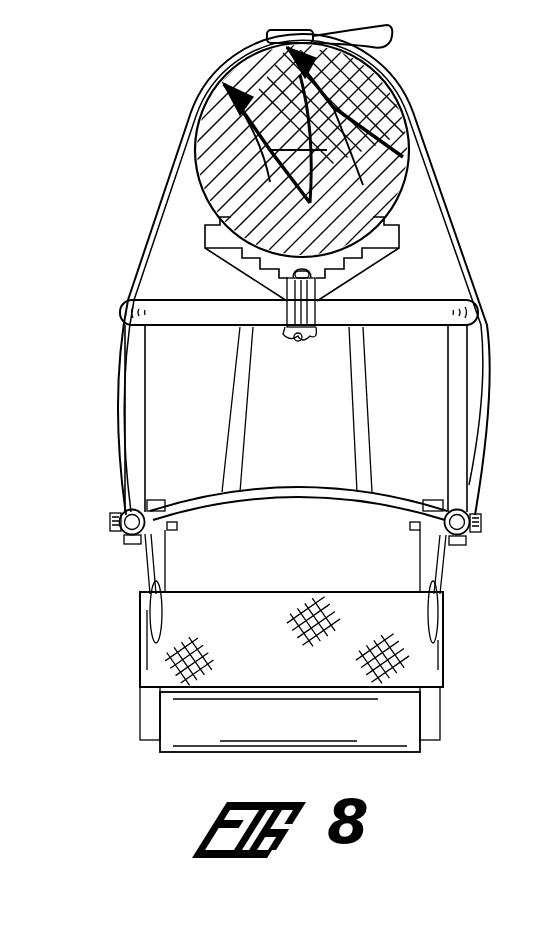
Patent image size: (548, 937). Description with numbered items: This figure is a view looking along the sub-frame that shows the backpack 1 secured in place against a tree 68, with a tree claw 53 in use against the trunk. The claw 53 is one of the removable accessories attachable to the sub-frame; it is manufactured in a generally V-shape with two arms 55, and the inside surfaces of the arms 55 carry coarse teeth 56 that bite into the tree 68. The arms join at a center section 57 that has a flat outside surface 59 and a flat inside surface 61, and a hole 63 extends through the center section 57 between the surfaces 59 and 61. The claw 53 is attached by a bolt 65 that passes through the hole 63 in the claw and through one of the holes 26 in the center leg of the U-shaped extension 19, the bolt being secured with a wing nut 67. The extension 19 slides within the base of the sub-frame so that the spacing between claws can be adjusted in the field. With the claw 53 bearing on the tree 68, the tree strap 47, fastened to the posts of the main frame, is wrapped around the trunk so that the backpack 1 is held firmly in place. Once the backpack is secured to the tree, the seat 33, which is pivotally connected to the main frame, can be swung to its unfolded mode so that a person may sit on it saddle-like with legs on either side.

The backpack 1 is at (100, 348).
The U-shaped extension 19 is at (430, 313).
The holes 26 is at (286, 314).
The seat 33 is at (128, 667).
The tree strap 47 is at (484, 386).
The tree claw 53 is at (332, 233).
The arms 55 is at (238, 252).
The coarse teeth 56 is at (212, 227).
The center section 57 is at (340, 282).
The flat outside surface 59 is at (314, 290).
The flat inside surface 61 is at (316, 277).
The hole 63 is at (282, 296).
The bolt 65 is at (297, 337).
The wing nut 67 is at (282, 332).
The tree 68 is at (207, 163).